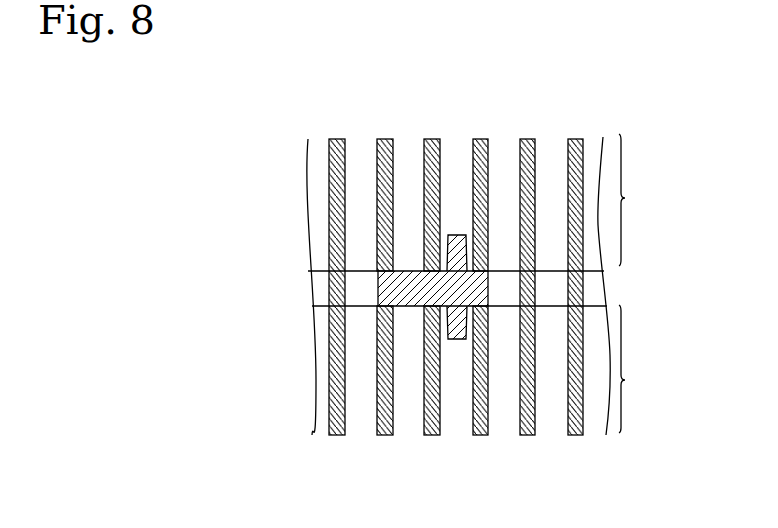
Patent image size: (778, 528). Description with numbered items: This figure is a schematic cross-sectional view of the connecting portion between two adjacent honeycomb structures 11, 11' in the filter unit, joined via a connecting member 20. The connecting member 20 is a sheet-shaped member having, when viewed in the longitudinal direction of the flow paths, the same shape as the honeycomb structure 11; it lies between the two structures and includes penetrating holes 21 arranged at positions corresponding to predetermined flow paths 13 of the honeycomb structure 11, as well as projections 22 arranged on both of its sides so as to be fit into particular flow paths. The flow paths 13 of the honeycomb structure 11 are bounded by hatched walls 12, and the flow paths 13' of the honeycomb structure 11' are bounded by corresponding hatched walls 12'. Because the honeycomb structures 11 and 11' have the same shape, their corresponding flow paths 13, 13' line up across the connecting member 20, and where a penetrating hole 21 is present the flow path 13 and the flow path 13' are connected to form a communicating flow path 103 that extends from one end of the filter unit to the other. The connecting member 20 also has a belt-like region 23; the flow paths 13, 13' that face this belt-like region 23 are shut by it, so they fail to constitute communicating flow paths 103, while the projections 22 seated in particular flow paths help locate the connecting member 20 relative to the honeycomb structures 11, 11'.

The communicating flow paths 103 is at (360, 158).
The flow path 13' is at (408, 120).
The second conductive pillar 12' is at (446, 261).
The honeycomb structure 11' is at (639, 200).
The connecting member 20 is at (611, 287).
The honeycomb structure 11 is at (637, 369).
The first conductive pillar 12 is at (532, 313).
The projection 22 is at (463, 340).
The flow path 13 is at (410, 455).
The penetrating hole 21 is at (363, 293).
The belt-like region 23 is at (412, 283).